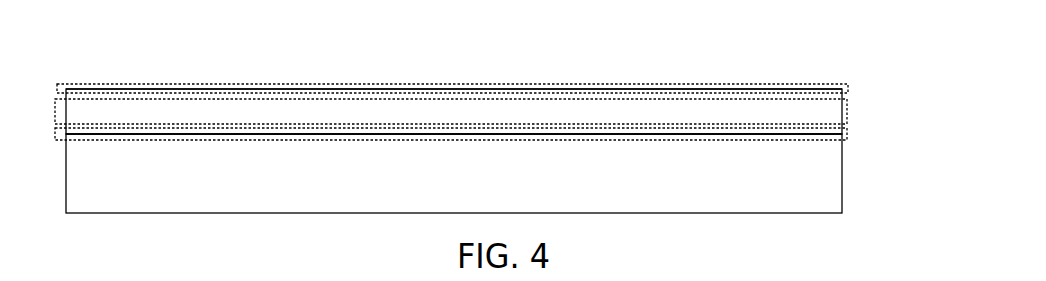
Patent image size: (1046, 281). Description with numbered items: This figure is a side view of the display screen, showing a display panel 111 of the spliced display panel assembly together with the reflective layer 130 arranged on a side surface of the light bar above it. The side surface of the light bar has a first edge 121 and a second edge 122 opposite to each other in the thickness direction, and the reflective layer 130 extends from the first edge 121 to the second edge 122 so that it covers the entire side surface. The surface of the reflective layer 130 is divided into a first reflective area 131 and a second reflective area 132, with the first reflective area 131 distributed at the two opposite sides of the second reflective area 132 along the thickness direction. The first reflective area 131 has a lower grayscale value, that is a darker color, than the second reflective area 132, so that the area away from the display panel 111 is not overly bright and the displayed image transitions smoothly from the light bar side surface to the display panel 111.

The display panel 111 is at (830, 198).
The first edge 121 is at (162, 89).
The second edge 122 is at (247, 134).
The reflective layer 130 is at (715, 112).
The first reflective area 131 is at (848, 90).
The second reflective area 132 is at (848, 117).